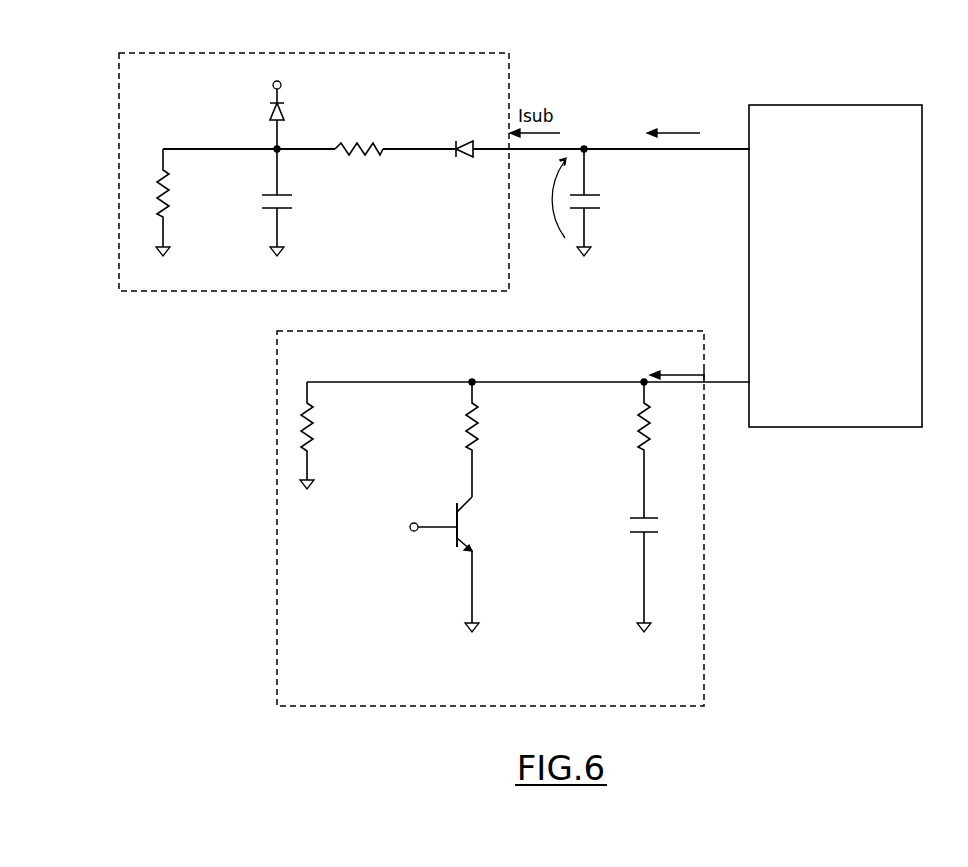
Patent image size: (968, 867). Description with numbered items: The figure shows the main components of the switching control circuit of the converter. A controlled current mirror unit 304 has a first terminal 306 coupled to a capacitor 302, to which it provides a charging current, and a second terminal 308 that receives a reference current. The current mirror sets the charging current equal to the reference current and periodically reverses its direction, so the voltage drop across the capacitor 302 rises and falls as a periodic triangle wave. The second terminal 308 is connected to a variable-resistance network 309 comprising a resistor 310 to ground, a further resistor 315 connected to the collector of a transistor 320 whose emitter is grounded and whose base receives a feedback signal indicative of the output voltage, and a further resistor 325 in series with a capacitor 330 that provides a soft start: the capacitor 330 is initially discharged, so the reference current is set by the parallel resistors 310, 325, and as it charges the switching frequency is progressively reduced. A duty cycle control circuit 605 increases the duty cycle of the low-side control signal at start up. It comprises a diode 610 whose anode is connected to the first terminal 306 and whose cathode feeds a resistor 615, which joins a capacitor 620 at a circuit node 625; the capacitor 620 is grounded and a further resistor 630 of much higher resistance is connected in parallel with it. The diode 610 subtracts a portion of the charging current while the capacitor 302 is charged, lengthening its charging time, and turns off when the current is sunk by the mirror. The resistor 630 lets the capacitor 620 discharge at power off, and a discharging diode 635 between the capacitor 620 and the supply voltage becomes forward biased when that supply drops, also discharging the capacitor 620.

The capacitor 302 is at (605, 206).
The controlled current mirror unit 304 is at (922, 427).
The first terminal 306 is at (748, 148).
The second terminal 308 is at (751, 378).
The variable-resistance network 309 is at (277, 331).
The resistor 310 is at (318, 438).
The further resistor 315 is at (484, 446).
The transistor 320 is at (484, 536).
The further resistor 325 is at (656, 446).
The capacitor 330 is at (656, 534).
The duty cycle control circuit 605 is at (119, 265).
The diode 610 is at (455, 143).
The resistor 615 is at (374, 158).
The capacitor 620 is at (296, 205).
The circuit node 625 is at (279, 148).
The further resistor 630 is at (176, 205).
The discharging diode 635 is at (266, 103).